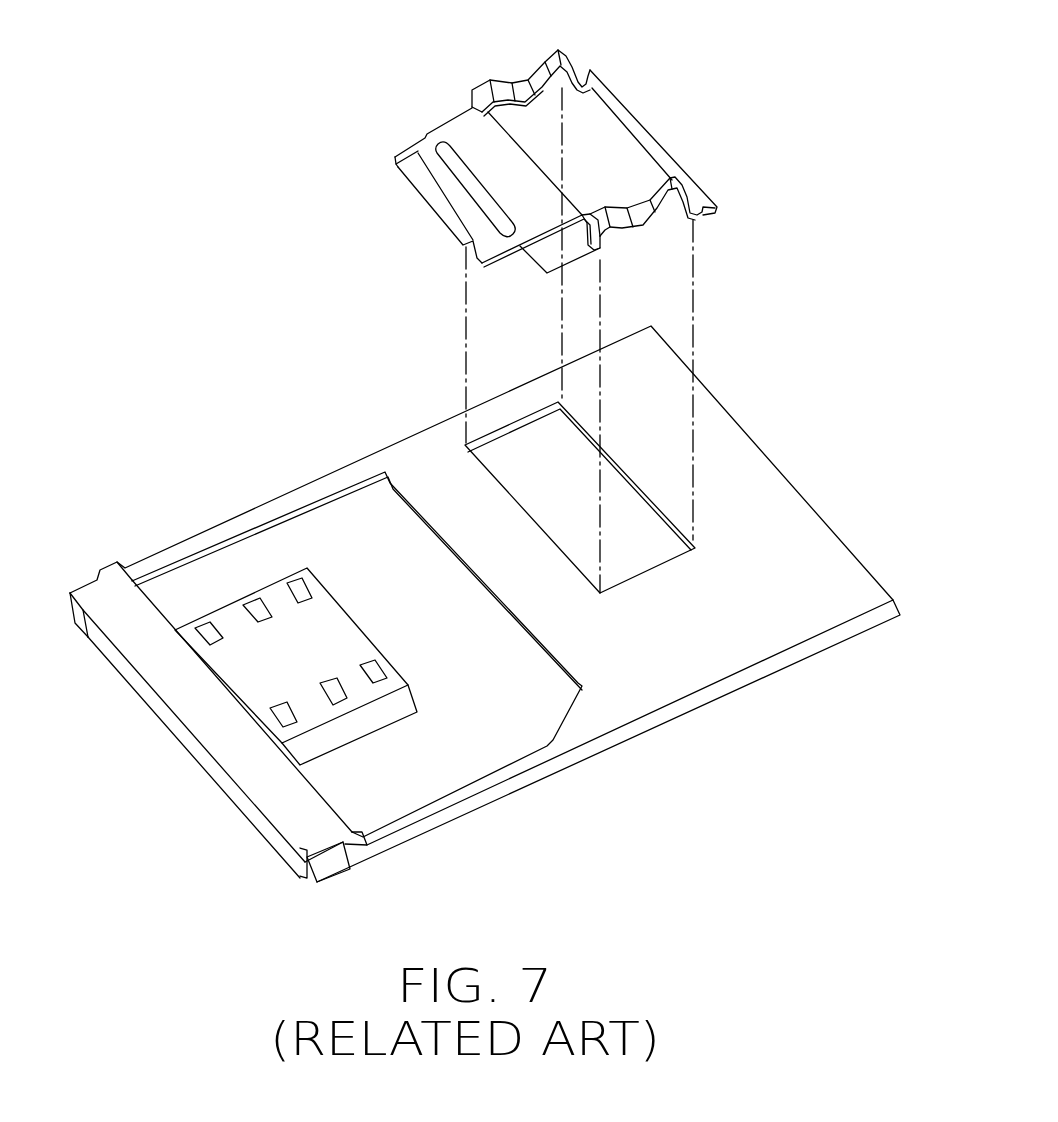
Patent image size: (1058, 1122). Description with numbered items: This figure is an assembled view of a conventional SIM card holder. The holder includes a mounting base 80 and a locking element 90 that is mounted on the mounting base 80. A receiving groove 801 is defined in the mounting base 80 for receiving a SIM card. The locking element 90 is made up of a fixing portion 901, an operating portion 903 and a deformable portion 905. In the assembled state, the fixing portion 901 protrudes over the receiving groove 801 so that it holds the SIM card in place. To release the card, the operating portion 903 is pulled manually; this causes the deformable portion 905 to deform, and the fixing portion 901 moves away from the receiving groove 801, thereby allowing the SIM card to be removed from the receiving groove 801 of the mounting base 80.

The mounting base 80 is at (769, 429).
The receiving groove 801 is at (478, 730).
The locking element 90 is at (521, 146).
The fixing portion 901 is at (422, 153).
The operating portion 903 is at (472, 183).
The deformable portion 905 is at (555, 63).